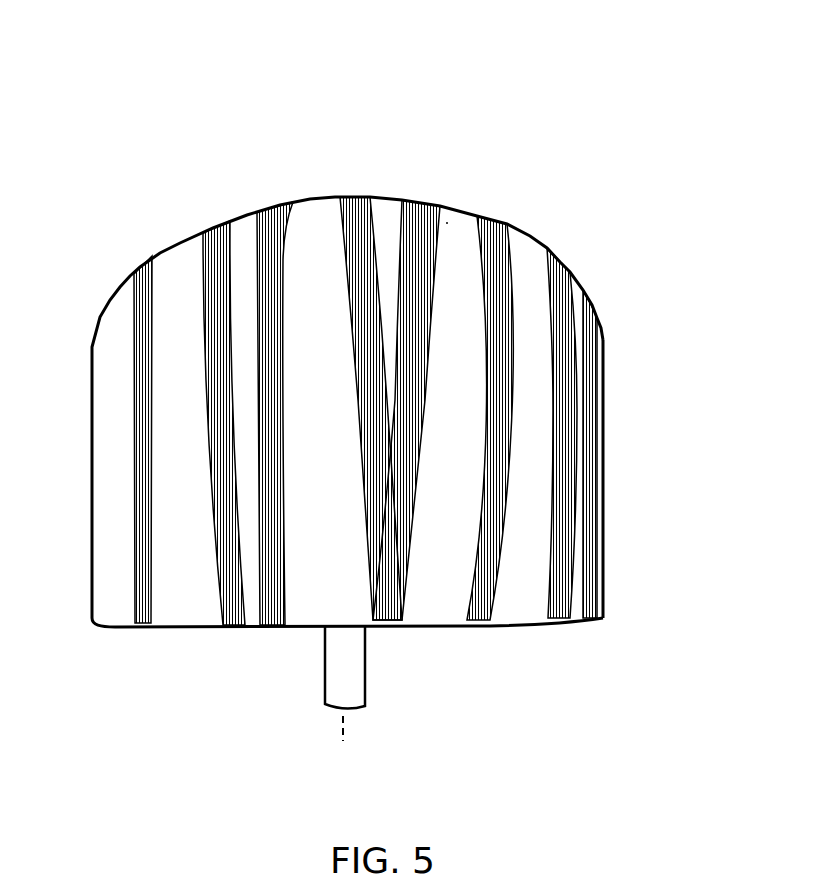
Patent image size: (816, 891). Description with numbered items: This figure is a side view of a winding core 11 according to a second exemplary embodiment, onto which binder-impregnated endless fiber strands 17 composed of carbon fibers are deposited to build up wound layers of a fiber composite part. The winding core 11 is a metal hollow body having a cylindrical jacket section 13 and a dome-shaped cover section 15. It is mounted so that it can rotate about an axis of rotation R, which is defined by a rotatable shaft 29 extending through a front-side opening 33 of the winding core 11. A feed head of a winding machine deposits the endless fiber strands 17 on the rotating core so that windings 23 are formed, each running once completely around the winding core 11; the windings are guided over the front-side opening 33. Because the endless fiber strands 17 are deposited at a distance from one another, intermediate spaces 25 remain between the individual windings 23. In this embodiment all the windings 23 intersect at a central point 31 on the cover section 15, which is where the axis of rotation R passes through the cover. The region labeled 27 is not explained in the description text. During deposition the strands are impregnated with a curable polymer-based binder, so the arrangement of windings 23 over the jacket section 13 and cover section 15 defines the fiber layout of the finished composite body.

The winding core 11 is at (517, 233).
The cylindrical jacket section 13 is at (603, 453).
The dome-shaped cover section 15 is at (461, 276).
The endless fiber strand 17 is at (573, 272).
The winding 23 is at (118, 366).
The intermediate space 25 is at (170, 278).
The strip junction 27 is at (380, 612).
The rotatable shaft 29 is at (350, 668).
The central point 31 is at (337, 197).
The front-side opening 33 is at (191, 647).
The axis of rotation R is at (339, 745).